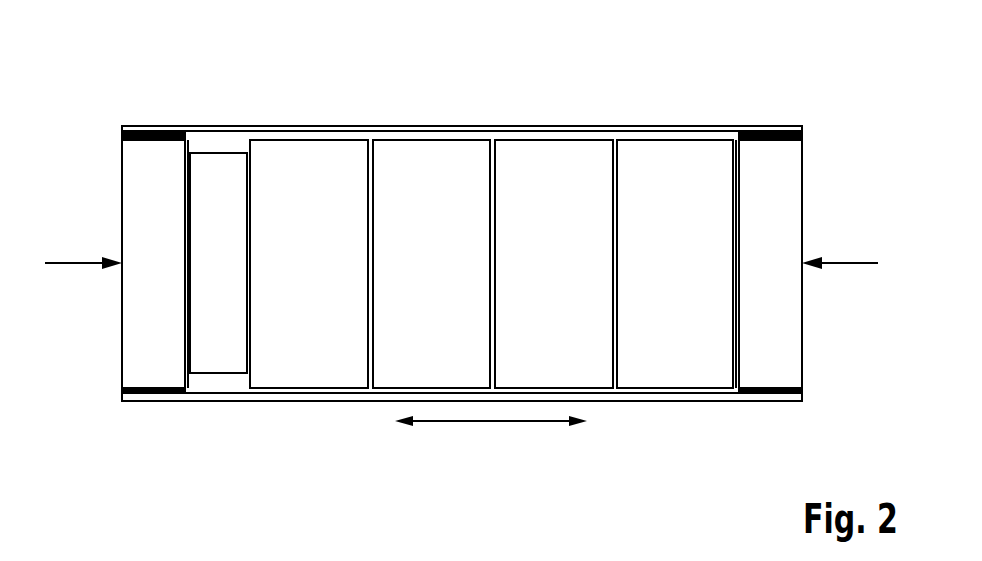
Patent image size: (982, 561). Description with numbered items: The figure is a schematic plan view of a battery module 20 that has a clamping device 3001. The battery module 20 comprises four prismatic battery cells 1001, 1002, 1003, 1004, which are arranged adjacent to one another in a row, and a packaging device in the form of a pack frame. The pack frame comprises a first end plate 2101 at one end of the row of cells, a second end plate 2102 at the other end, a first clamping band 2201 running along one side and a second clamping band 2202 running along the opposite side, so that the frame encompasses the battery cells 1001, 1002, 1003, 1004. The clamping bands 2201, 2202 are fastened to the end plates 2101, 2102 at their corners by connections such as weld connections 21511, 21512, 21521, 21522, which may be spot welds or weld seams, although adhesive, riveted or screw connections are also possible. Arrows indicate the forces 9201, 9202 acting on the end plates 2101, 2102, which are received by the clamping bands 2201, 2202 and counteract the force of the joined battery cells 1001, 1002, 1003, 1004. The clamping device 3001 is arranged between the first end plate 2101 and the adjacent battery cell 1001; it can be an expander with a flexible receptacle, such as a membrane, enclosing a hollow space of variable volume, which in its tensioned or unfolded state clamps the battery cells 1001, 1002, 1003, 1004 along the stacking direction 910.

The battery module 20 is at (473, 95).
The first clamping band 2201 is at (643, 402).
The second clamping band 2202 is at (643, 126).
The weld connection 21511 is at (122, 391).
The weld connection 21512 is at (122, 134).
The weld connection 21521 is at (802, 391).
The weld connection 21522 is at (802, 135).
The first end plate 2101 is at (170, 278).
The second end plate 2102 is at (783, 278).
The clamping device 3001 is at (235, 278).
The prismatic battery cell 1001 is at (330, 278).
The prismatic battery cell 1002 is at (451, 278).
The prismatic battery cell 1003 is at (575, 278).
The prismatic battery cell 1004 is at (695, 278).
The force 9201 is at (79, 247).
The force 9202 is at (841, 248).
The stacking direction 910 is at (491, 434).